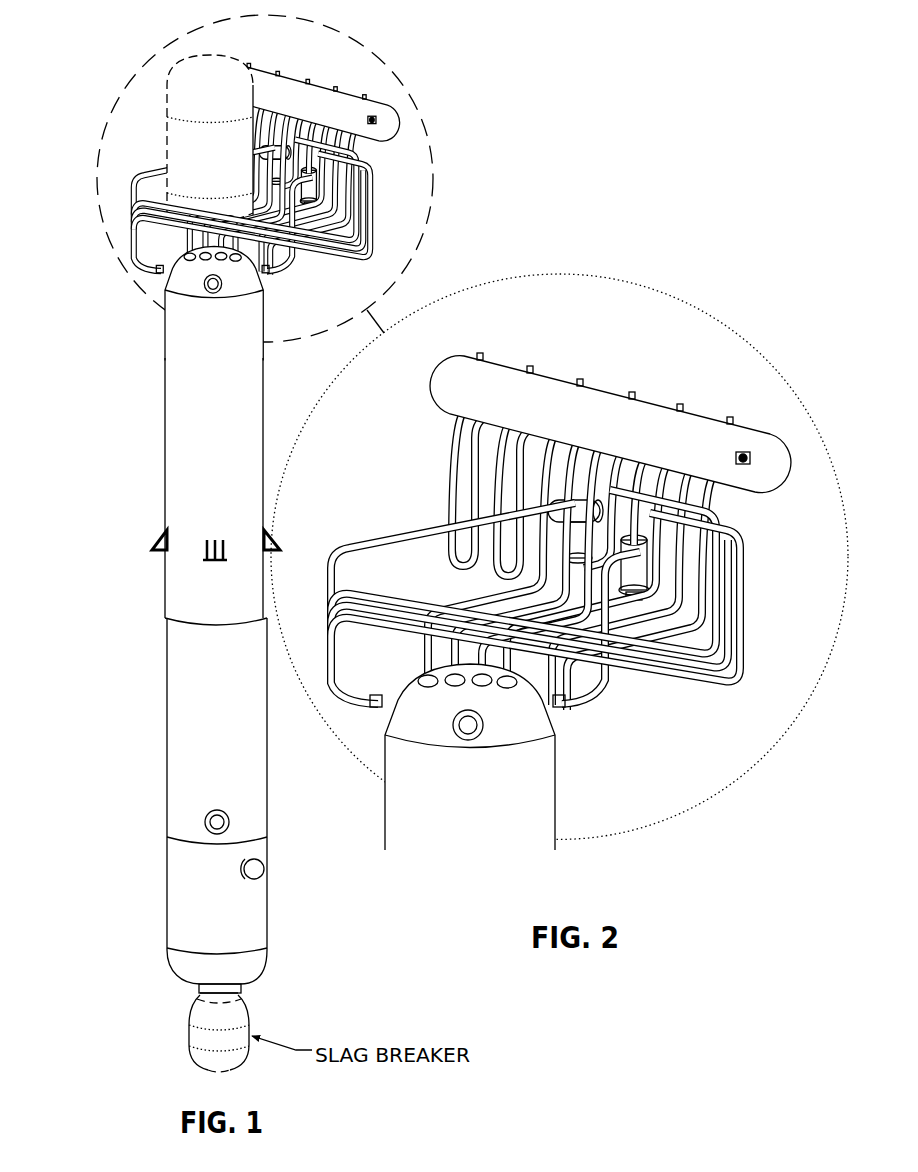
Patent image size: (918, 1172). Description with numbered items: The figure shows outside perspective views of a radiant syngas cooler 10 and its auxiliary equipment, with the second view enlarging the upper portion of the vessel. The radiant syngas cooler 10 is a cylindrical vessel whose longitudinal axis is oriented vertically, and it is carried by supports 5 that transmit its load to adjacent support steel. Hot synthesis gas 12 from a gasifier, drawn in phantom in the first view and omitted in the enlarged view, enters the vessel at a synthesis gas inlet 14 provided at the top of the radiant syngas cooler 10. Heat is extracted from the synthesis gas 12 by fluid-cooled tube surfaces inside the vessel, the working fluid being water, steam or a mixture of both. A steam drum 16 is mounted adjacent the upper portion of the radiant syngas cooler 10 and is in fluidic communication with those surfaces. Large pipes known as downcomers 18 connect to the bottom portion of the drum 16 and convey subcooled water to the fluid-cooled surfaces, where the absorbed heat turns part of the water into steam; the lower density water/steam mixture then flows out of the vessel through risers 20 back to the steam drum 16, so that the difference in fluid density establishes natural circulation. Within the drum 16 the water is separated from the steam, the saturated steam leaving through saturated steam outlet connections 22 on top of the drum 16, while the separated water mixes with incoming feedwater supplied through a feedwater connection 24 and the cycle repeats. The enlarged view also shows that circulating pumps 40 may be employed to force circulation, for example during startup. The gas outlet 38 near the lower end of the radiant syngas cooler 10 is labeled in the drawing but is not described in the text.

In FIG. 1, the radiant syngas cooler 10 is at (236, 619).
In FIG. 1, the hot synthesis gas 12 is at (140, 125).
In FIG. 1, the supports 5 is at (149, 525).
In FIG. 1, the gas outlet 38 is at (348, 902).
In FIG. 2, the synthesis gas inlet 14 is at (461, 663).
In FIG. 2, the steam drum 16 is at (636, 383).
In FIG. 2, the downcomers 18 is at (595, 686).
In FIG. 2, the risers 20 is at (619, 560).
In FIG. 2, the saturated steam outlet connections 22 is at (605, 357).
In FIG. 2, the feedwater connection 24 is at (805, 404).
In FIG. 2, the circulating pumps 40 is at (674, 630).